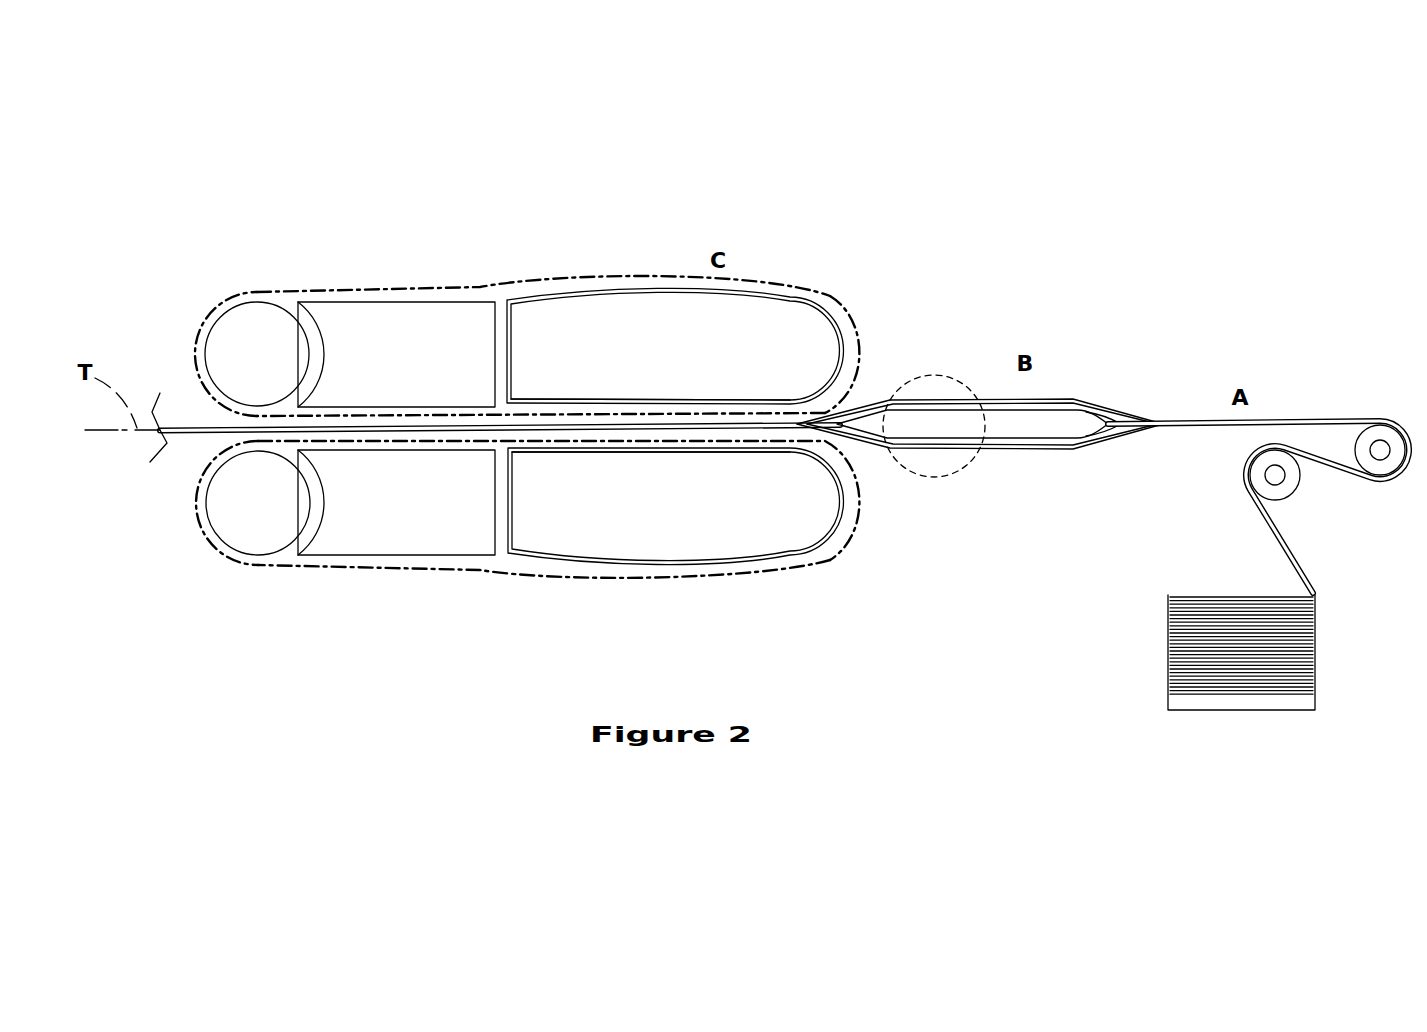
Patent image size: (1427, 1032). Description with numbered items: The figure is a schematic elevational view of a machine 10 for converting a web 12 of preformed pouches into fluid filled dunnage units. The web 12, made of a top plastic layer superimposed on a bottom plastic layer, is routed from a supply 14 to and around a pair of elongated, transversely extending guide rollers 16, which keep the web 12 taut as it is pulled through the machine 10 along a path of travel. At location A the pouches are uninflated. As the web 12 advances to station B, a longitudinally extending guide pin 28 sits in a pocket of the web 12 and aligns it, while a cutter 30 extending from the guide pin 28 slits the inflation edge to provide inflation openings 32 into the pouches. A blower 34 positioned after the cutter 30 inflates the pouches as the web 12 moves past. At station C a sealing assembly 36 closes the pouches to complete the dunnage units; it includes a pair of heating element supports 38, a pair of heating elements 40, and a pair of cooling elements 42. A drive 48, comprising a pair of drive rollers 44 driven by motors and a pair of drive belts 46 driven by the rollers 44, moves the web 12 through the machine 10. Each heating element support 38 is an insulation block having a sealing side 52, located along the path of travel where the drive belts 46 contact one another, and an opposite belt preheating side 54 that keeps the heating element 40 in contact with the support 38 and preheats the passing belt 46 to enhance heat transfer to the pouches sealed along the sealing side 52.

The machine 10 is at (648, 135).
The web 12 is at (1315, 420).
The supply 14 is at (1315, 636).
The guide rollers 16 is at (1278, 478).
The guide pin 28 is at (965, 440).
The cutter 30 is at (1120, 420).
The inflation openings 32 is at (940, 422).
The blower 34 is at (945, 377).
The sealing assembly 36 is at (538, 230).
The heating element support 38 is at (795, 325).
The heating element 40 is at (863, 308).
The cooling elements 42 is at (418, 345).
The drive rollers 44 is at (245, 335).
The drive belts 46 is at (465, 282).
The drive 48 is at (284, 235).
The sealing side 52 is at (700, 402).
The belt preheating side 54 is at (667, 285).